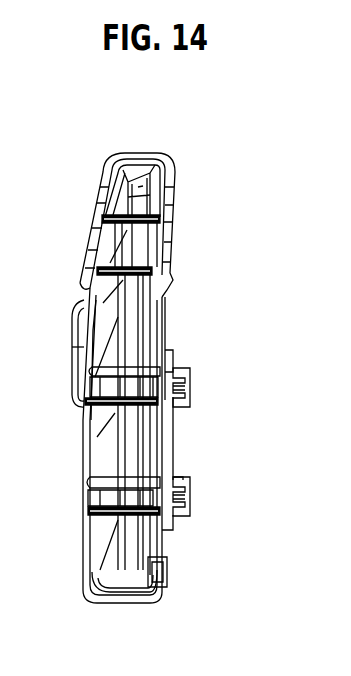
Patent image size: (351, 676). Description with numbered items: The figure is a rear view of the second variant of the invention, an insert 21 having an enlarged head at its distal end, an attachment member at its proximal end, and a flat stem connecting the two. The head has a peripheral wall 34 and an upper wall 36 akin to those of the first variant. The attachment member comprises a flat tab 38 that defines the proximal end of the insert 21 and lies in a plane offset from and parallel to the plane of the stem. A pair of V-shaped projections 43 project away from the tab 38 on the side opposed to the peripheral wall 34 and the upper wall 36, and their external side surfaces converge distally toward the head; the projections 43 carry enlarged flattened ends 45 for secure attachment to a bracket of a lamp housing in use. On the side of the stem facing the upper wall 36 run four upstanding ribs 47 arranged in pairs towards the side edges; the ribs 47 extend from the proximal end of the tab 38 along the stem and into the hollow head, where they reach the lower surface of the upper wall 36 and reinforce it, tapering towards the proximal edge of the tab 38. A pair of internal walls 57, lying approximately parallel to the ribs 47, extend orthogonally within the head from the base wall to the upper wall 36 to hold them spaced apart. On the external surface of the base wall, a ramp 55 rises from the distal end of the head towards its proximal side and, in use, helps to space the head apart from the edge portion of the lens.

The peripheral wall 34 is at (143, 152).
The internal walls 57 is at (100, 268).
The flat tab 38 is at (48, 306).
The upper wall 36 is at (88, 305).
The insert 21 is at (213, 264).
The V-shaped projections 43 is at (173, 378).
The enlarged flattened ends 45 is at (190, 372).
The upstanding ribs 47 is at (83, 397).
The ramp 55 is at (168, 577).